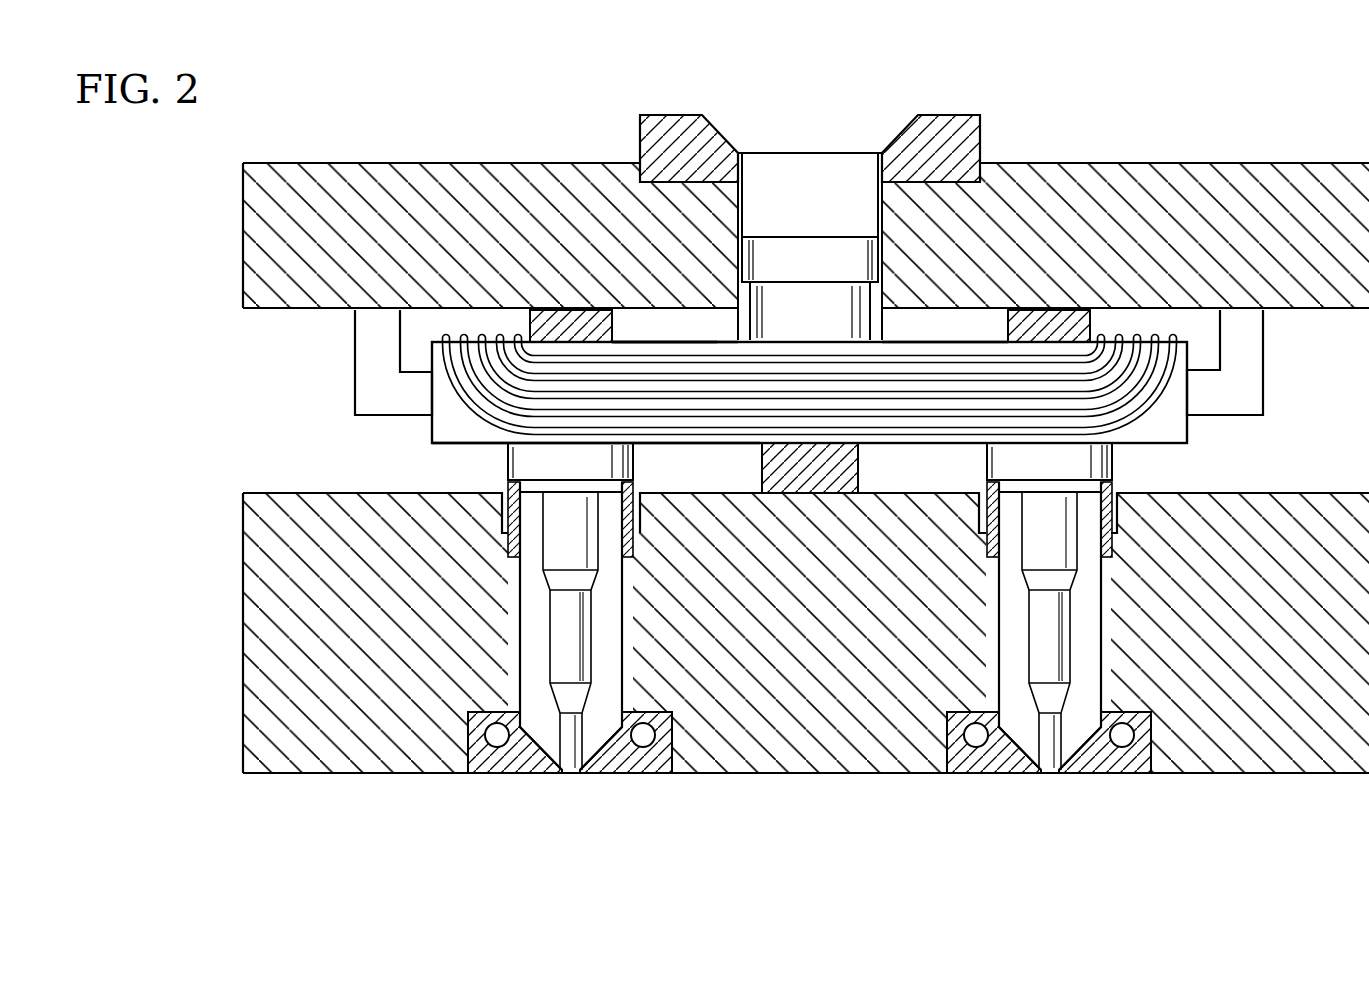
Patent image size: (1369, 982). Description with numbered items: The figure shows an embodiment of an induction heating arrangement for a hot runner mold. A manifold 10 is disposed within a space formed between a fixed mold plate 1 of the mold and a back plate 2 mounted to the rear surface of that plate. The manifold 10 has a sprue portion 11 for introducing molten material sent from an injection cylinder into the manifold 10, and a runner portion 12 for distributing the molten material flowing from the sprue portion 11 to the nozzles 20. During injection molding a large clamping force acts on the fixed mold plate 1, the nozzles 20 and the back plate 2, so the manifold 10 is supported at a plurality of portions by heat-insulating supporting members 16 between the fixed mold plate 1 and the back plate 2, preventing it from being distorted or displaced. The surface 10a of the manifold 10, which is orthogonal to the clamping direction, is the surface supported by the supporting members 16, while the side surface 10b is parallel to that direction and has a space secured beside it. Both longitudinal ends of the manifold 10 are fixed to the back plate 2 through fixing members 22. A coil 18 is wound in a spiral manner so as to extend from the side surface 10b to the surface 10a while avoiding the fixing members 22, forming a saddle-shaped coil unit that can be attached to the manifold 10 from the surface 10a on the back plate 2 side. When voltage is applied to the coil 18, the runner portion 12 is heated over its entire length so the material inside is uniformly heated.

The fixed mold plate 1 is at (319, 740).
The back plate 2 is at (437, 207).
The manifold 10 is at (943, 330).
The surface 10a is at (717, 340).
The side surface 10b is at (913, 345).
The sprue portion 11 is at (837, 260).
The runner portion 12 is at (627, 348).
The heat-insulating supporting member 16 is at (567, 310).
The coil 18 is at (1152, 419).
The nozzle 20 is at (553, 662).
The fixing member 22 is at (378, 340).